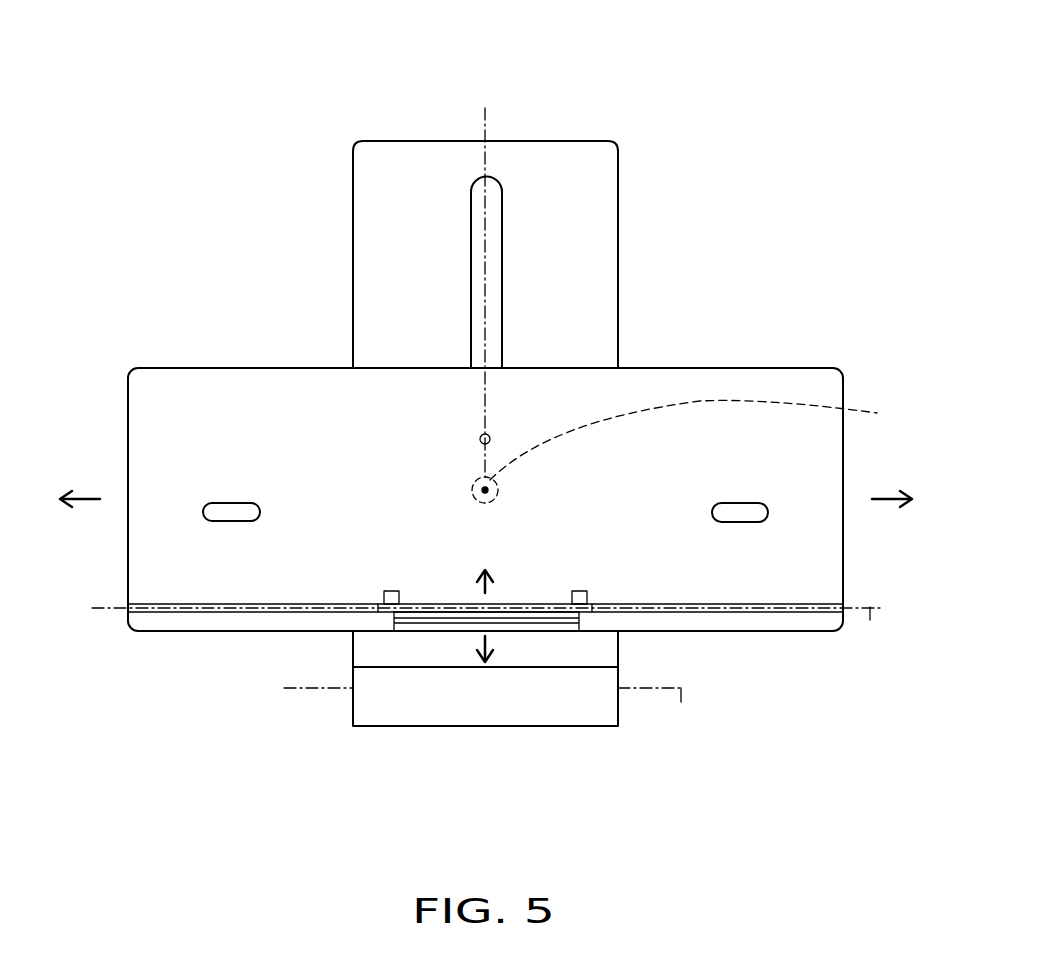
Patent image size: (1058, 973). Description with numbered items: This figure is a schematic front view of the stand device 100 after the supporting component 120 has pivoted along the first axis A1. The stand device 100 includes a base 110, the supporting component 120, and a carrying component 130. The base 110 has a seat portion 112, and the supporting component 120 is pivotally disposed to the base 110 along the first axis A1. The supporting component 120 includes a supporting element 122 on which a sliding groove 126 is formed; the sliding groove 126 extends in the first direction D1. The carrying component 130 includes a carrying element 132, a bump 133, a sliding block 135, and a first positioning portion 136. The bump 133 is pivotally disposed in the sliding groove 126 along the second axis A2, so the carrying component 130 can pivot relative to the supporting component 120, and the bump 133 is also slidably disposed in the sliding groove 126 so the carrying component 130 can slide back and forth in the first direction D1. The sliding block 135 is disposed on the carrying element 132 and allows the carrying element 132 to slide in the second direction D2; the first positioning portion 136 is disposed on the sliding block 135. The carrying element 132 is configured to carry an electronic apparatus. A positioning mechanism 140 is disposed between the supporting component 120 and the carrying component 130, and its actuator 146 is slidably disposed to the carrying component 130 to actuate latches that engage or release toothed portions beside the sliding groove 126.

The stand device 100 is at (158, 72).
The base 110 is at (385, 757).
The seat portion 112 is at (590, 707).
The supporting component 120 is at (318, 124).
The supporting element 122 is at (600, 217).
The sliding groove 126 is at (471, 263).
The carrying component 130 is at (120, 349).
The carrying element 132 is at (147, 415).
The bump 133 is at (704, 439).
The sliding block 135 is at (413, 612).
The first positioning portion 136 is at (384, 596).
The positioning mechanism 140 is at (486, 710).
The actuator 146 is at (529, 618).
The first axis A1 is at (689, 712).
The second axis A2 is at (488, 490).
The first direction D1 is at (485, 114).
The second direction D2 is at (879, 631).